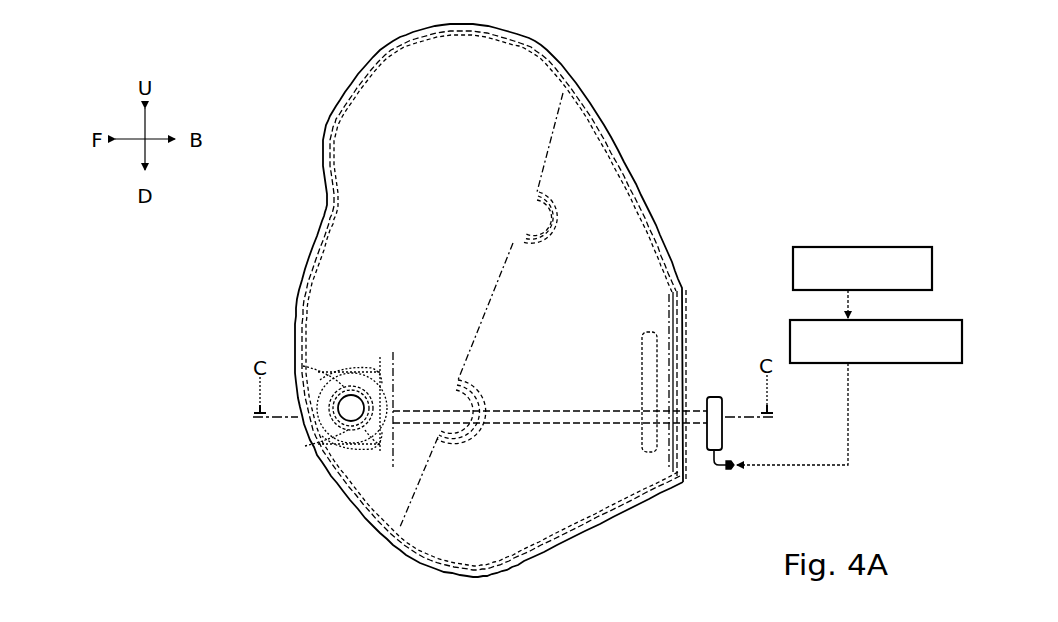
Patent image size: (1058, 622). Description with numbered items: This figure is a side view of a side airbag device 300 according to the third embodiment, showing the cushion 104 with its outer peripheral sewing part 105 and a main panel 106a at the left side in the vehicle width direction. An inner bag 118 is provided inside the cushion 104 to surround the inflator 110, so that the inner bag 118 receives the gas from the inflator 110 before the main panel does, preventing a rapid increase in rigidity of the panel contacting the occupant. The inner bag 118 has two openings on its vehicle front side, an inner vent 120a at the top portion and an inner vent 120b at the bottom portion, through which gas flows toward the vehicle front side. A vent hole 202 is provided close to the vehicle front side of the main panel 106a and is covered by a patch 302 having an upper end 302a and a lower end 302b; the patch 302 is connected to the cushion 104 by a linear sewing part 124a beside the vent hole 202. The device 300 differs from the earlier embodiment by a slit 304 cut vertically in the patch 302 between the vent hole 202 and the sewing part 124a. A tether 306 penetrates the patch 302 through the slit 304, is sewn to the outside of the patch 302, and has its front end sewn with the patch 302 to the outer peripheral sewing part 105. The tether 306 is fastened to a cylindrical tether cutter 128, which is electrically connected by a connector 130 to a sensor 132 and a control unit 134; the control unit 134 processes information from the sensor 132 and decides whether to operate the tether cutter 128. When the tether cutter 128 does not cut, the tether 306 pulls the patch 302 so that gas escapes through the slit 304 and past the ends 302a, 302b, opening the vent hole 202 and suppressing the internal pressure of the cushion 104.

The side airbag device 300 is at (296, 46).
The cushion 104 is at (381, 50).
The outer peripheral sewing part 105 is at (326, 174).
The main panel 106a is at (364, 114).
The inner bag 118 is at (548, 133).
The inner vent 120a is at (530, 211).
The inner vent 120b is at (443, 380).
The sewing part 124a is at (395, 352).
The inflator 110 is at (650, 332).
The tether 306 is at (526, 411).
The patch 302 is at (301, 362).
The upper end 302a is at (338, 366).
The lower end 302b is at (340, 468).
The vent hole 202 is at (350, 411).
The slit 304 is at (373, 437).
The tether cutter 128 is at (715, 397).
The connector 130 is at (729, 471).
The sensor 132 is at (862, 247).
The control unit 134 is at (873, 364).